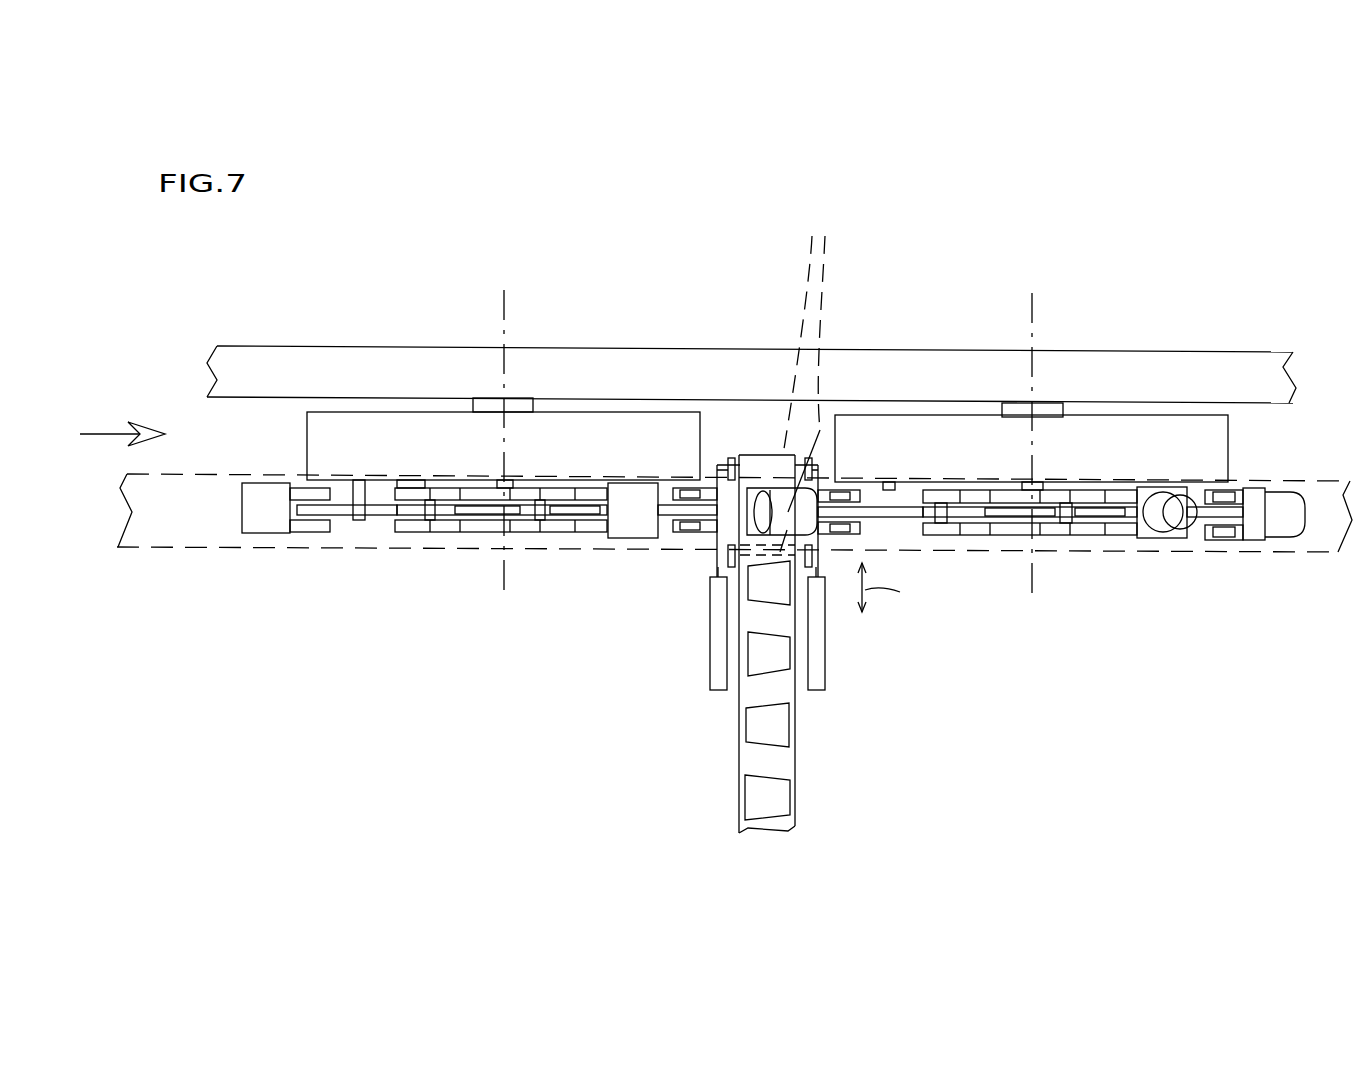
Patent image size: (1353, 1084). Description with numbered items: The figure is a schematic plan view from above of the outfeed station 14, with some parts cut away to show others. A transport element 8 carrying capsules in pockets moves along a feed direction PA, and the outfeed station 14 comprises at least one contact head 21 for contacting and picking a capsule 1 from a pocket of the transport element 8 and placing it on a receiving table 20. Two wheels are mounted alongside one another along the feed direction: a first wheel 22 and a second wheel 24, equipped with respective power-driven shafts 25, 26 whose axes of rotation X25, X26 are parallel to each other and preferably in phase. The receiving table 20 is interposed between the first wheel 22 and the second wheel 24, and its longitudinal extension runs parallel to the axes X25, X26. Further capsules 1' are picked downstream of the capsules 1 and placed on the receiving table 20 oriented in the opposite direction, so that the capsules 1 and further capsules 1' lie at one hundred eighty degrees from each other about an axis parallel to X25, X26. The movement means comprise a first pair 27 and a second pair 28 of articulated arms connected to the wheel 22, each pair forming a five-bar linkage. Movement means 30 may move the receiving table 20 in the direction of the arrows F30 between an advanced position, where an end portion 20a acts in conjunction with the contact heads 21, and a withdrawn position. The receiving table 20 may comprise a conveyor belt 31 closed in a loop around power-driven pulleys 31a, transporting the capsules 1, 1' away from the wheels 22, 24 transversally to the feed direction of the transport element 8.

The capsule 1 is at (834, 544).
The further capsule 1' is at (951, 624).
The transport element 8 is at (150, 532).
The outfeed station 14 is at (658, 792).
The receiving table 20 is at (812, 752).
The end portion of the receiving table 20a is at (733, 440).
The contact head 21 is at (286, 533).
The first wheel 22 is at (363, 427).
The second wheel 24 is at (870, 435).
The power-driven shaft 25 is at (492, 405).
The power-driven shaft 26 is at (1015, 412).
The first pair of articulated arms 27 is at (480, 510).
The second pair of articulated arms 28 is at (560, 512).
The movement means 30 is at (718, 606).
The conveyor belt 31 is at (757, 823).
The power-driven pulleys 31a is at (811, 359).
The axis of rotation X25 is at (505, 330).
The axis of rotation X26 is at (1032, 330).
The arrows F30 is at (903, 587).
The feed direction PA is at (122, 419).